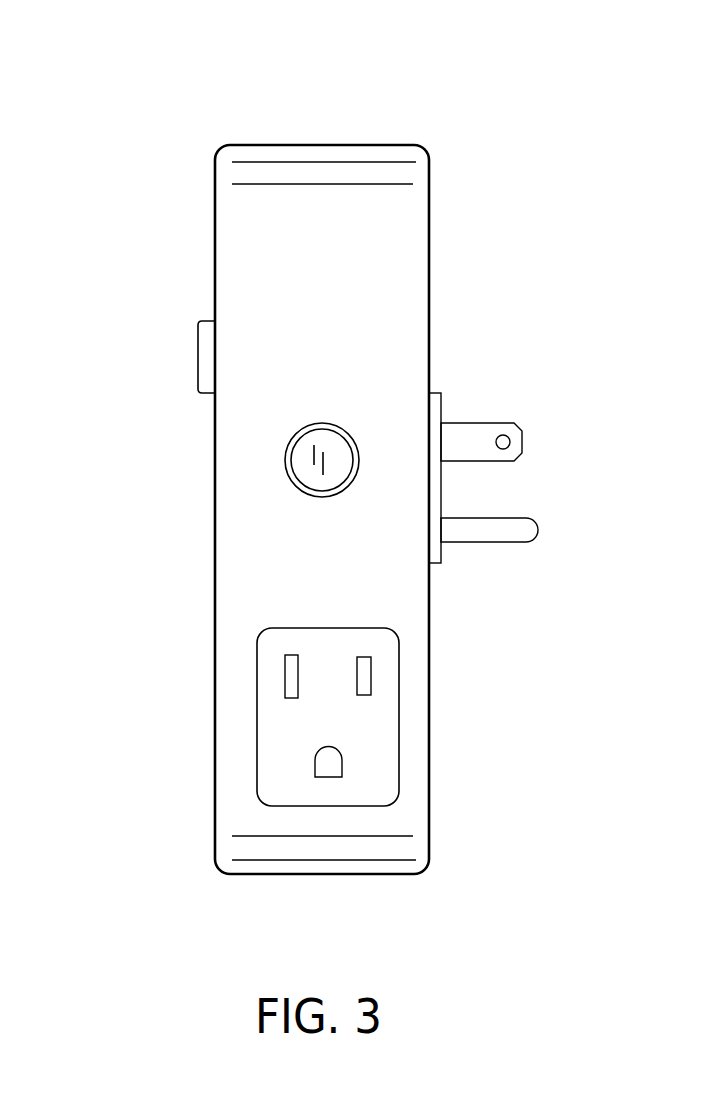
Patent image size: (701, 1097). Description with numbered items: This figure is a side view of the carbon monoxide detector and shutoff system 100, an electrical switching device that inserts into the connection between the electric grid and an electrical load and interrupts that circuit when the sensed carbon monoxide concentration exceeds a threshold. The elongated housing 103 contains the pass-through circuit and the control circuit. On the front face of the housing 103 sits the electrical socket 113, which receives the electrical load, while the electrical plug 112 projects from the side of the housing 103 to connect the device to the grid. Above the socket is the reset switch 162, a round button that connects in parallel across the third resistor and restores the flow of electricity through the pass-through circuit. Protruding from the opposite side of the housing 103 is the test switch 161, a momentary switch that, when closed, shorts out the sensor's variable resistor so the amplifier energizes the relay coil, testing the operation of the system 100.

The carbon monoxide detector and shutoff system 100 is at (120, 104).
The housing 103 is at (395, 202).
The test switch 161 is at (198, 356).
The reset switch 162 is at (334, 445).
The NEMA 5-15P electrical plug 112 is at (483, 433).
The NEMA 5-15 electrical socket 113 is at (382, 722).